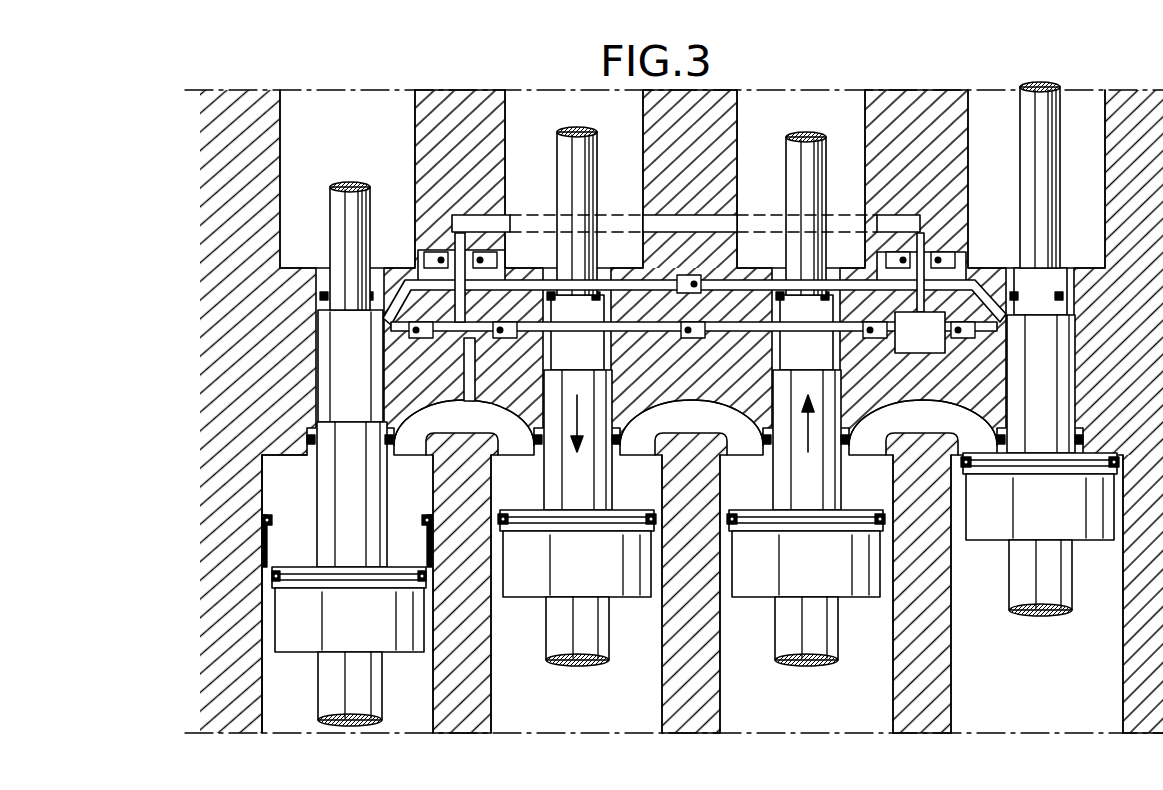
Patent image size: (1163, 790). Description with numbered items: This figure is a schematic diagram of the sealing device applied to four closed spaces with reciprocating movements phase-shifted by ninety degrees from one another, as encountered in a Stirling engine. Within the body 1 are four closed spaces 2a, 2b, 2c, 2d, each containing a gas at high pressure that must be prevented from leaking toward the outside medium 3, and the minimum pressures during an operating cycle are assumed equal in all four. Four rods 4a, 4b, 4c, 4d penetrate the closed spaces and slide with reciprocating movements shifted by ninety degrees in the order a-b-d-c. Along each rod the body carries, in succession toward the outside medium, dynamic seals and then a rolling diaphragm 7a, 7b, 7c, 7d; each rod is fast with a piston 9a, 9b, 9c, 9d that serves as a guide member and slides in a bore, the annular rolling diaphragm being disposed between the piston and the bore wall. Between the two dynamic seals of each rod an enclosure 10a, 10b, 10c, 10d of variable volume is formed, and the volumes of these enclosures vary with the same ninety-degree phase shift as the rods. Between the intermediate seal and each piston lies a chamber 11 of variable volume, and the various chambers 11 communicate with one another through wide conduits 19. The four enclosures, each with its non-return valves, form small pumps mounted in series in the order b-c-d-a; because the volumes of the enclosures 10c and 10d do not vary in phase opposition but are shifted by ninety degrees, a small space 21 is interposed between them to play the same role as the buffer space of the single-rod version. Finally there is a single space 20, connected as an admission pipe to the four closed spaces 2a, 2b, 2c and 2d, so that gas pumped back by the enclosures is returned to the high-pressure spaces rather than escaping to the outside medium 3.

The body 1 is at (225, 398).
The closed space 2a is at (287, 157).
The closed space 2b is at (522, 122).
The closed space 2c is at (838, 116).
The closed space 2d is at (1073, 118).
The outside medium 3 is at (291, 725).
The rod 4a is at (370, 228).
The rod 4b is at (597, 212).
The rod 4c is at (825, 215).
The rod 4d is at (1058, 160).
The rolling diaphragm 7a is at (265, 556).
The rolling diaphragm 7b is at (510, 552).
The rolling diaphragm 7c is at (739, 552).
The rolling diaphragm 7d is at (964, 507).
The piston 9a is at (308, 645).
The piston 9b is at (541, 596).
The piston 9c is at (769, 596).
The piston 9d is at (1001, 548).
The enclosure 10a is at (318, 345).
The enclosure 10b is at (553, 302).
The enclosure 10c is at (782, 325).
The enclosure 10d is at (1070, 300).
The chamber 11 is at (283, 482).
The wide conduit 19 is at (468, 432).
The space 20 is at (918, 223).
The small space 21 is at (933, 342).